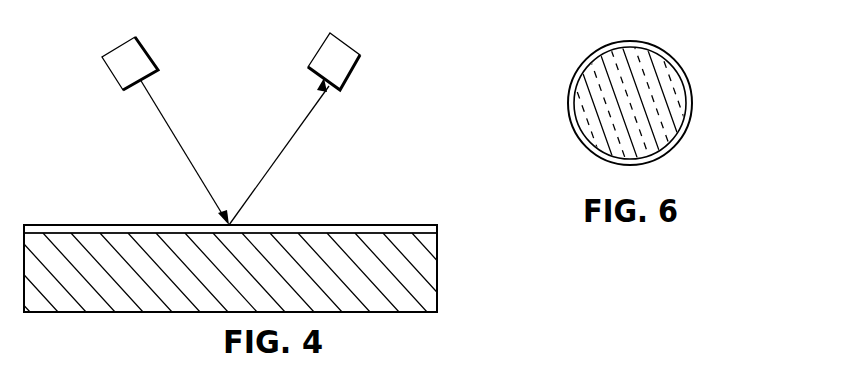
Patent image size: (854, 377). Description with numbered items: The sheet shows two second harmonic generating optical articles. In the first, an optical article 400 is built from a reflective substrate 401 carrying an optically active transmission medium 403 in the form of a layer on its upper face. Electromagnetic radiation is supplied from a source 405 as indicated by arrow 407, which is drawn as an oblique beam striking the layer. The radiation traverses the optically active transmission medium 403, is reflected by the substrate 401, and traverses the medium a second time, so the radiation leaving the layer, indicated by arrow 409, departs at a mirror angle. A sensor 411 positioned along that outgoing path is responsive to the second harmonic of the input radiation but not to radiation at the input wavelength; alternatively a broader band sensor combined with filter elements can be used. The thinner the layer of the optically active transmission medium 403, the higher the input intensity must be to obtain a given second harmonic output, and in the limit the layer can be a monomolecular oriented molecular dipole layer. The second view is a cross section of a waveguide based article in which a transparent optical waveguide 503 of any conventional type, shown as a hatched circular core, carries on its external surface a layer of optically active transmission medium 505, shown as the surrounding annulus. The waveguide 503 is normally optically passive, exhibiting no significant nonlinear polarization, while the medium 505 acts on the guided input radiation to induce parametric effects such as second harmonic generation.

In FIG. 4, the optical article 400 is at (458, 241).
In FIG. 4, the reflective substrate 401 is at (438, 277).
In FIG. 4, the optically active transmission medium 403 is at (403, 224).
In FIG. 4, the source 405 is at (155, 63).
In FIG. 4, the arrow 407 is at (187, 157).
In FIG. 4, the arrow 409 is at (285, 142).
In FIG. 4, the sensor 411 is at (357, 50).
In FIG. 6, the transparent optical waveguide 503 is at (670, 85).
In FIG. 6, the optically active transmission medium 505 is at (660, 45).